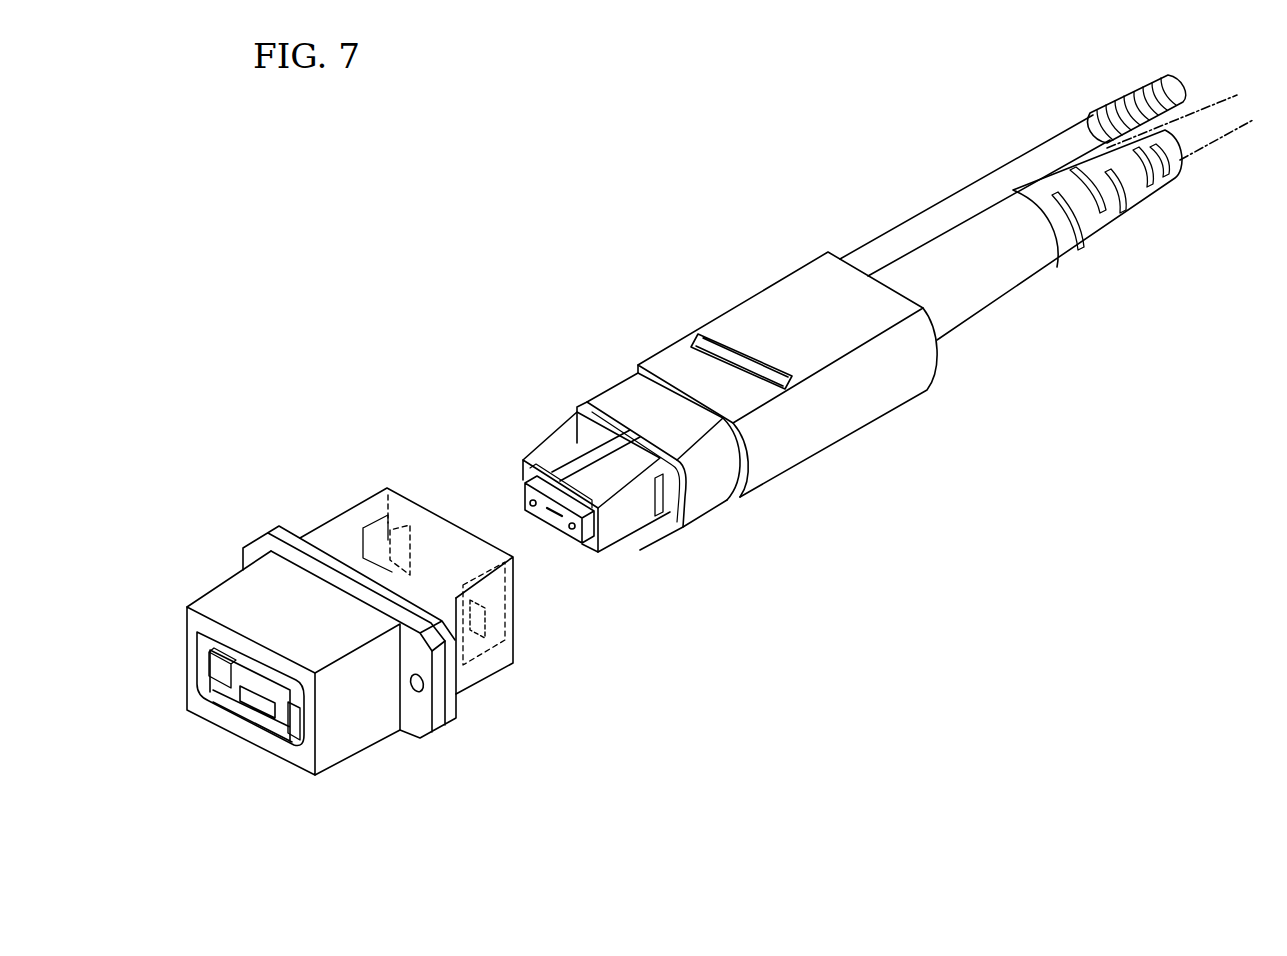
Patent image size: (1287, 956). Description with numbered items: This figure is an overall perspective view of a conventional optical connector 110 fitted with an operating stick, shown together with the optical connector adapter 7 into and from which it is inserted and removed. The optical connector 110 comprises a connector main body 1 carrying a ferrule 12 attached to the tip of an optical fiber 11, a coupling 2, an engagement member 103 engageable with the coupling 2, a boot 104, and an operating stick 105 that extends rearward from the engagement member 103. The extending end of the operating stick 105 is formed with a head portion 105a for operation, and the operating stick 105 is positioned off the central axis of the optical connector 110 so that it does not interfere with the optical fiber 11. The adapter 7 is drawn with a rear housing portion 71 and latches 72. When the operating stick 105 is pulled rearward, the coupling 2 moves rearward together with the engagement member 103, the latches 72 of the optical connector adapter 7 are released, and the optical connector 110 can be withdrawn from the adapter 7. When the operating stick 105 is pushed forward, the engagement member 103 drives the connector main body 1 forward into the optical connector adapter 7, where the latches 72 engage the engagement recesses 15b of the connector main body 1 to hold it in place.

The optical connector 110 is at (805, 212).
The connector main body 1 is at (558, 448).
The coupling 2 is at (598, 390).
The ferrule 12 is at (526, 492).
The engagement recess 15b is at (667, 516).
The engagement member 103 is at (757, 296).
The boot 104 is at (1006, 300).
The operating stick 105 is at (1063, 131).
The head portion 105a is at (1130, 91).
The optical fiber 11 is at (1222, 150).
The optical connector adapter 7 is at (355, 617).
The adapter rear housing 71 is at (485, 690).
The latch 72 is at (410, 522).